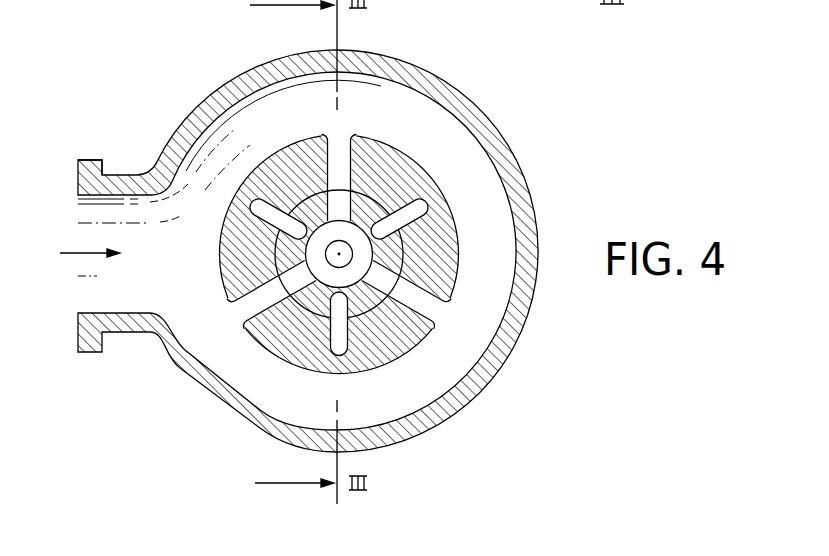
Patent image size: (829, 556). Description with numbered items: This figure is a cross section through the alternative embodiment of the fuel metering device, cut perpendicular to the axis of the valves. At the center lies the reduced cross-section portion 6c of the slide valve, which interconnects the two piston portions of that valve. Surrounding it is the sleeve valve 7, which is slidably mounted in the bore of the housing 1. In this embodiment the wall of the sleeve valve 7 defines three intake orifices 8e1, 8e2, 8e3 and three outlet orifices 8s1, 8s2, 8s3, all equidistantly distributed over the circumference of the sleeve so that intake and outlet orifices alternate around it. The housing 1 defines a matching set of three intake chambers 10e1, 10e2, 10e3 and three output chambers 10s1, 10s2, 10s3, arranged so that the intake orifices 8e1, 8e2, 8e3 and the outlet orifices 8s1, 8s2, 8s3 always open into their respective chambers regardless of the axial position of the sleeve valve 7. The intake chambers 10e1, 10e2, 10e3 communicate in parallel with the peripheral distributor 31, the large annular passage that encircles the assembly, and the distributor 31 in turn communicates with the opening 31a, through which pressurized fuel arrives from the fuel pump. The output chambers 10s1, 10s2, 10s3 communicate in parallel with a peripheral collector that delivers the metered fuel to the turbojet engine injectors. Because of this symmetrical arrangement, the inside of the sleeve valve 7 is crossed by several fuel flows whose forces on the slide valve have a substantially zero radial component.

The housing 1 is at (308, 146).
The reduced cross-section portion 6c is at (326, 257).
The sleeve valve 7 is at (378, 231).
The intake orifice 8e1 is at (349, 202).
The intake orifice 8e2 is at (383, 272).
The intake orifice 8e3 is at (294, 352).
The outlet orifice 8s1 is at (380, 232).
The outlet orifice 8s2 is at (376, 363).
The outlet orifice 8s3 is at (282, 150).
The intake chamber 10e1 is at (343, 152).
The intake chamber 10e2 is at (428, 307).
The intake chamber 10e3 is at (262, 312).
The output chamber 10s1 is at (447, 206).
The output chamber 10s2 is at (343, 352).
The output chamber 10s3 is at (262, 206).
The peripheral distributor 31 is at (280, 114).
The opening 31a is at (119, 181).